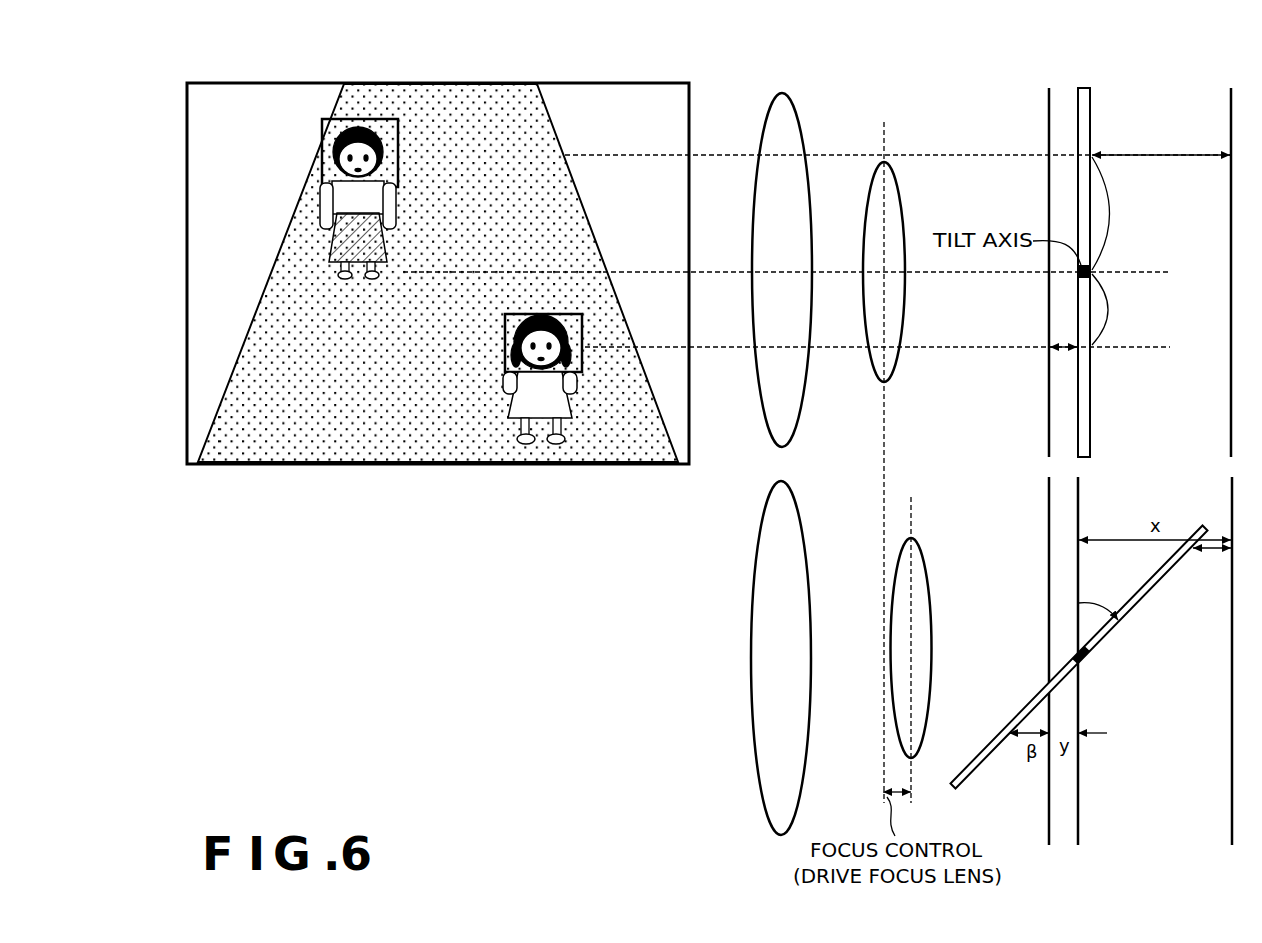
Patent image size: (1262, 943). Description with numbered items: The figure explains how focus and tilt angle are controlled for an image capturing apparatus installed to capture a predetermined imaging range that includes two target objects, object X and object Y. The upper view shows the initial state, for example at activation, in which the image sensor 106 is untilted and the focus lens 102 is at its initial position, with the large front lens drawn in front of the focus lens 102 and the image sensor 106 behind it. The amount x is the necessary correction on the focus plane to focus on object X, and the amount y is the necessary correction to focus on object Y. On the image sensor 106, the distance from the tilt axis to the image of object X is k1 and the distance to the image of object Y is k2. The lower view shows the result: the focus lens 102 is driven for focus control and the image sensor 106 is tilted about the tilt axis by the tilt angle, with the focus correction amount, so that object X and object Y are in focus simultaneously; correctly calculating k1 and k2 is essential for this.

The focus lens 102 is at (870, 187).
The image sensor 106 is at (1090, 103).
The object X is at (379, 128).
The object Y is at (506, 412).
The correction amount for object X x is at (1161, 142).
The correction amount for object Y y is at (1063, 359).
The distance from tilt axis to object X k1 is at (1117, 213).
The distance from tilt axis to object Y k2 is at (1113, 309).